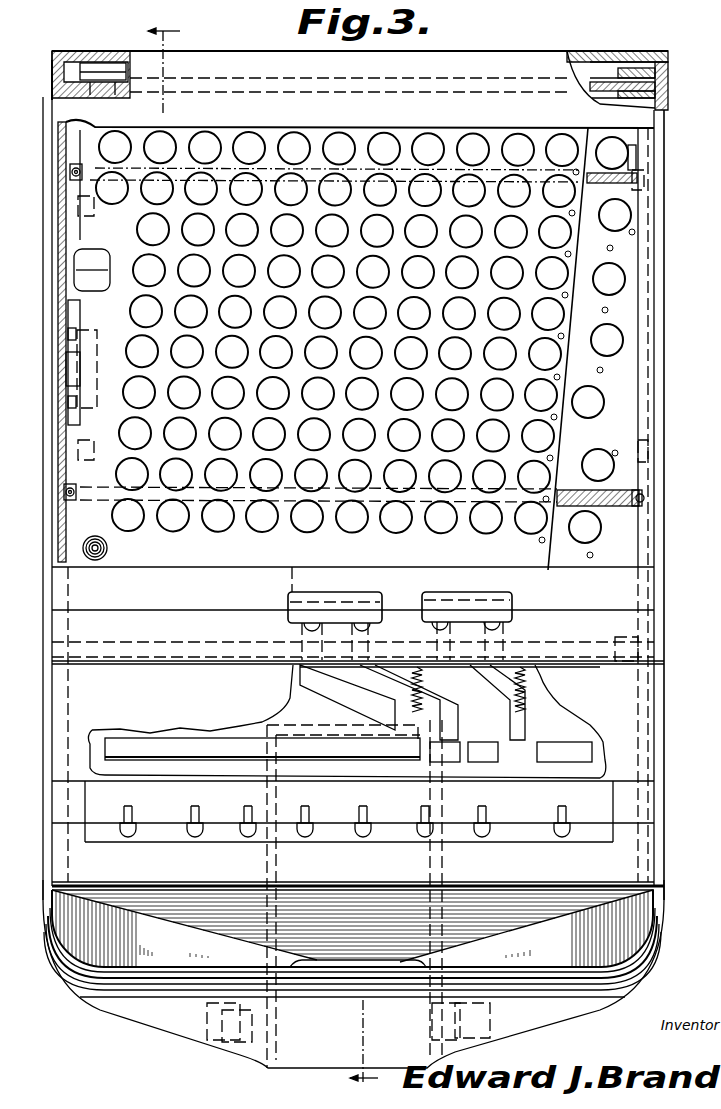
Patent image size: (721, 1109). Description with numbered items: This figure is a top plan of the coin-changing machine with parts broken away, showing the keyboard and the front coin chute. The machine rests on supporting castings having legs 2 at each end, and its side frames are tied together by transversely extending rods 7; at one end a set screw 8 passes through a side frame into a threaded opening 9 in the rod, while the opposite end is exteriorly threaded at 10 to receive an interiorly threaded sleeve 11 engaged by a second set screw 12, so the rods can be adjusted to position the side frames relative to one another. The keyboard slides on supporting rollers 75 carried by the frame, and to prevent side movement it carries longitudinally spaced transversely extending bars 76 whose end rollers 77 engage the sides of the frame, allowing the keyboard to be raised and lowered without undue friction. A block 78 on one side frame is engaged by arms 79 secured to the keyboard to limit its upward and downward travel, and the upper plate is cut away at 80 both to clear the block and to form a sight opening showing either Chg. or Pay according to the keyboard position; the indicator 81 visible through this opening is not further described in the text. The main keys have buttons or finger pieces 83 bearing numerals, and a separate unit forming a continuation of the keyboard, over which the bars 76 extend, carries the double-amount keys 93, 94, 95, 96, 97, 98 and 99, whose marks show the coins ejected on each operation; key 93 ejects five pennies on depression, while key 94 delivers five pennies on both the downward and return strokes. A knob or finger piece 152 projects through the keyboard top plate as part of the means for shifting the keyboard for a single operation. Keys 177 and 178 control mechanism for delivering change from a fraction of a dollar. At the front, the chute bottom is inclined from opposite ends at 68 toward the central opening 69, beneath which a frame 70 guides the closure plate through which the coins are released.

The legs 2 is at (263, 555).
The transversely extending rods 7 is at (110, 77).
The set screw 8 is at (50, 80).
The threaded opening 9 is at (106, 66).
The exteriorly threaded end 10 is at (587, 80).
The interiorly threaded sleeve 11 is at (627, 77).
The set screw 12 is at (668, 84).
The supporting rollers 75 is at (89, 217).
The transversely extending bars 76 is at (95, 162).
The rollers 77 is at (77, 164).
The block 78 is at (72, 375).
The arms 79 is at (73, 335).
The cut-away portion 80 is at (87, 350).
The charge/pay key 81 is at (85, 244).
The buttons or finger pieces 83 is at (481, 137).
The key button 93 is at (602, 529).
The key button 94 is at (614, 465).
The key button 95 is at (604, 396).
The key button 96 is at (623, 335).
The key button 97 is at (626, 283).
The key button 98 is at (630, 218).
The key button 99 is at (624, 145).
The knob or finger piece 152 is at (108, 552).
The key 177 is at (288, 596).
The key 178 is at (455, 594).
The inclined chute bottom 68 is at (352, 943).
The central opening 69 is at (353, 960).
The frame 70 is at (437, 879).